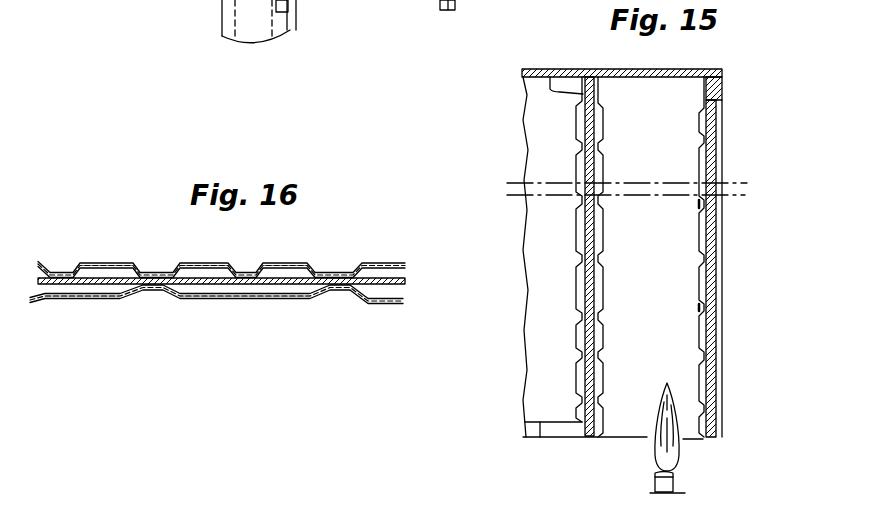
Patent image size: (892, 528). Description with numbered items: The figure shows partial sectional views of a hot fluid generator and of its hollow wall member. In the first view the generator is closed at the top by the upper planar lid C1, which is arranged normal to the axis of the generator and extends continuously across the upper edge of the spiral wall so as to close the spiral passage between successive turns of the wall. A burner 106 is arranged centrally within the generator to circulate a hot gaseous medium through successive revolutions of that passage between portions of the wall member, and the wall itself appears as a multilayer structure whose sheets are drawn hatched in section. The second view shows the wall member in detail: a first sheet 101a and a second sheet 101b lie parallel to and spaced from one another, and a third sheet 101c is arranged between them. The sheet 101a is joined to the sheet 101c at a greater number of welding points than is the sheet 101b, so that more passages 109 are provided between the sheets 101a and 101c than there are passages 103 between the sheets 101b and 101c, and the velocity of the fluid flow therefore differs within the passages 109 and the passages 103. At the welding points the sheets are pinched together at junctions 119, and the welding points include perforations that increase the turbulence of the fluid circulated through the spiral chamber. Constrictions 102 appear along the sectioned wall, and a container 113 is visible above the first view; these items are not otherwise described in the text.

In FIG. 15, the upper planar lid C1 is at (655, 71).
In FIG. 16, the first sheet 101a is at (378, 266).
In FIG. 15, the second sheet 101b is at (603, 149).
In FIG. 16, the second sheet 101b is at (392, 303).
In FIG. 15, the third sheet 101c is at (578, 112).
In FIG. 16, the third sheet 101c is at (405, 282).
In FIG. 15, the constriction in tube wall 102 is at (722, 212).
In FIG. 16, the second passage 103 is at (78, 287).
In FIG. 15, the burner 106 is at (653, 489).
In FIG. 16, the second passageway 109 is at (110, 264).
In FIG. 16, the cylindrical container 113 is at (297, 12).
In FIG. 16, the pinched junction of layers 119 is at (157, 273).